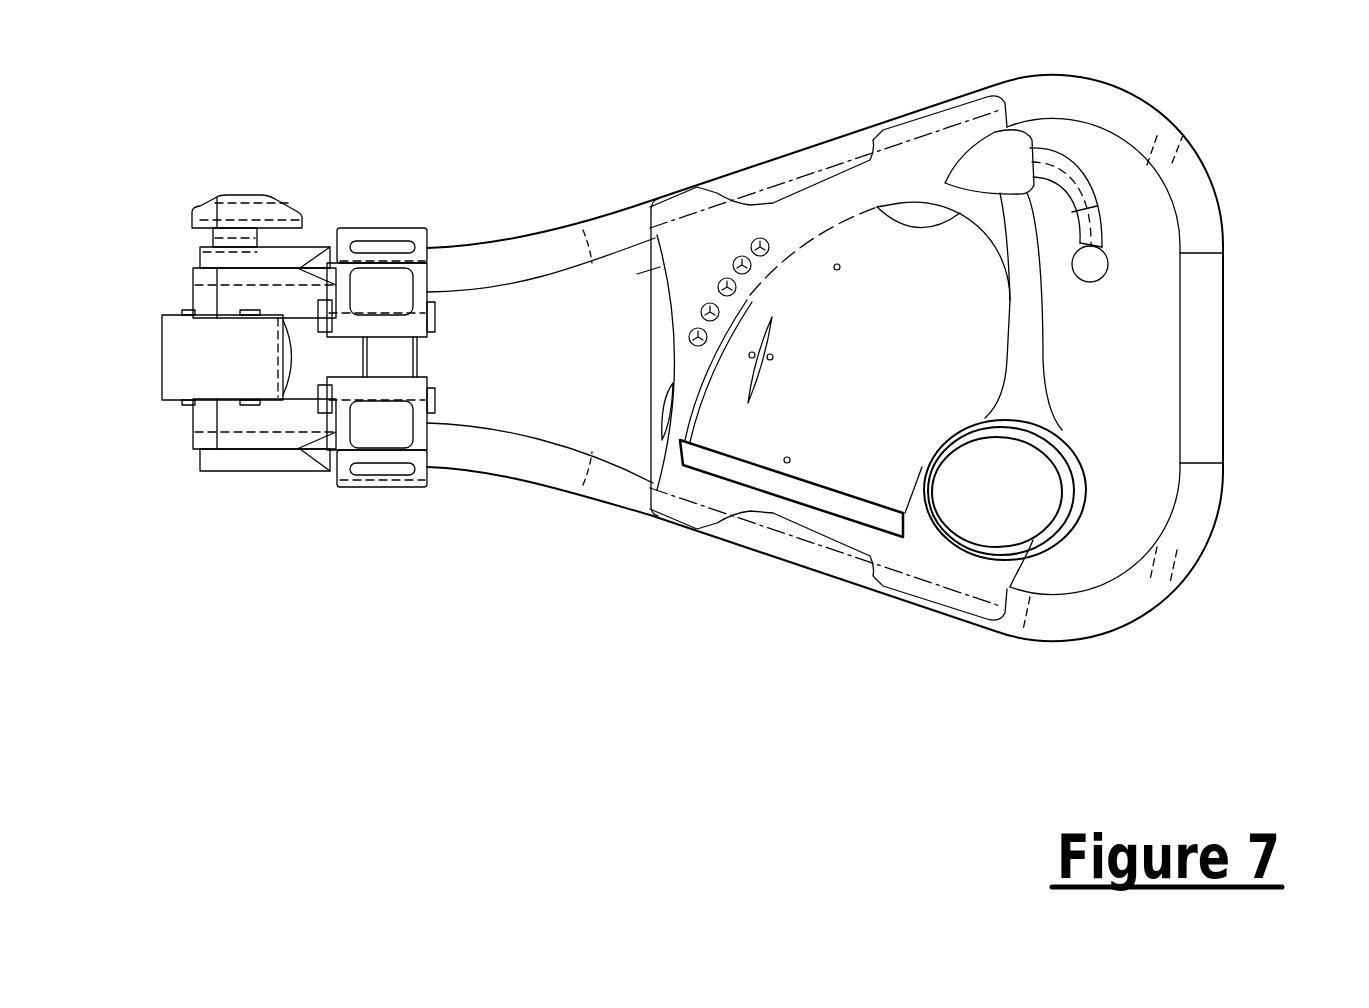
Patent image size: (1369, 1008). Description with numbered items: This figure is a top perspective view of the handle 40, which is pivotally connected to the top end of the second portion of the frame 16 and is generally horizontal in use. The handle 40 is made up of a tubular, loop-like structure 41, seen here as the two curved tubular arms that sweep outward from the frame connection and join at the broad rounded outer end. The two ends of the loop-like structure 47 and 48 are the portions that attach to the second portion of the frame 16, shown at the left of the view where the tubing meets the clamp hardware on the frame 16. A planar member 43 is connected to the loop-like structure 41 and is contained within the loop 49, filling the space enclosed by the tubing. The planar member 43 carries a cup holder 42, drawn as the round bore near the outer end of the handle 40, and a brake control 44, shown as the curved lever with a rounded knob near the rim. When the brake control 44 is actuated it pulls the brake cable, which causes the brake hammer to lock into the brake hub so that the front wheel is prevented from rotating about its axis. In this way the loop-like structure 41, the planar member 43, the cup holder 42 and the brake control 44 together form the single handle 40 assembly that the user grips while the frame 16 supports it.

The frame 16 is at (254, 341).
The handle 40 is at (775, 488).
The loop-like structure 41 is at (811, 340).
The cup holder 42 is at (1105, 547).
The planar member 43 is at (815, 419).
The brake control 44 is at (1158, 163).
The end of the loop-like structure 47 is at (540, 531).
The end of the loop-like structure 48 is at (541, 166).
The loop 49 is at (1106, 374).